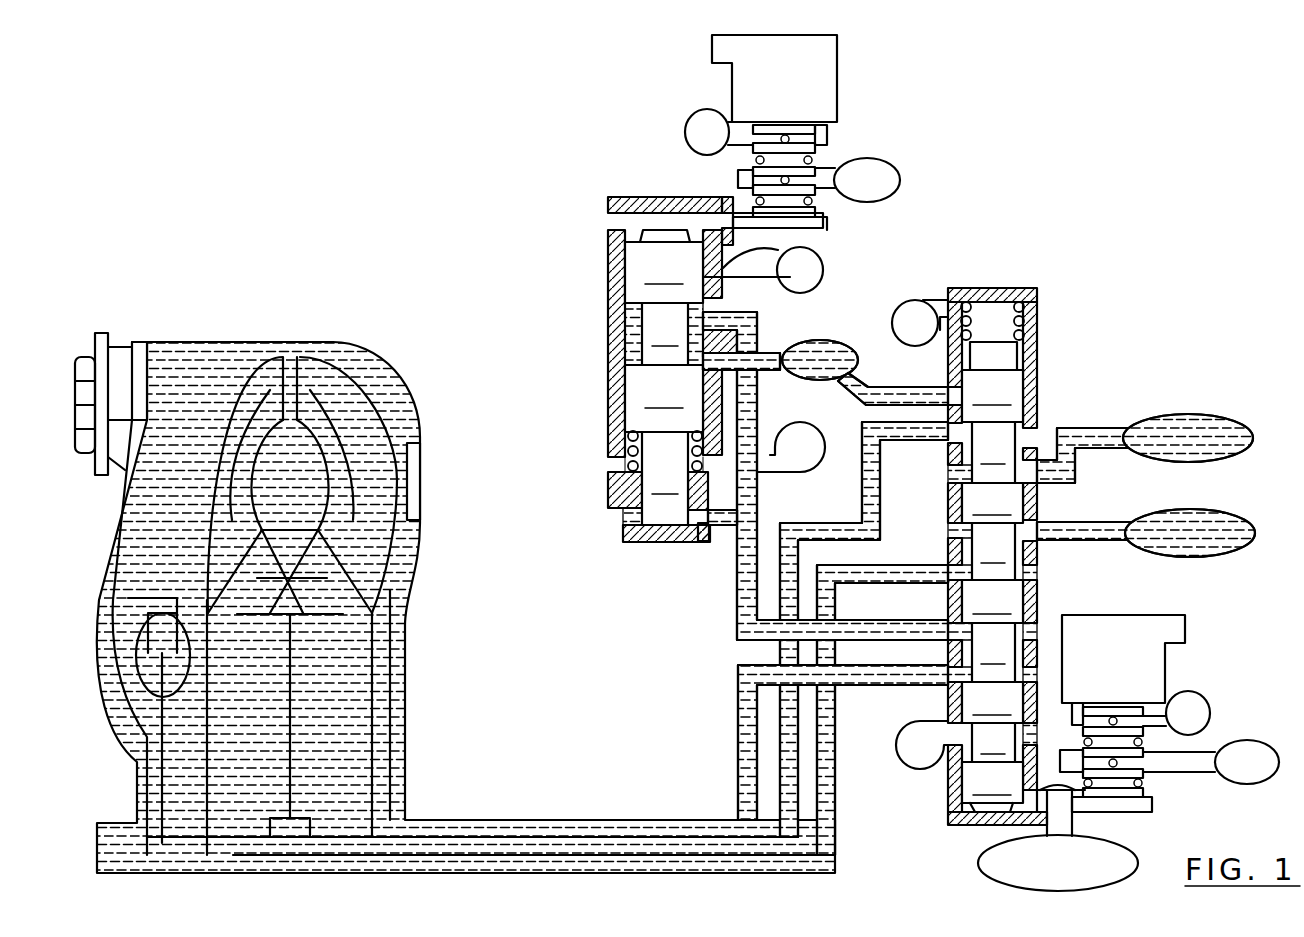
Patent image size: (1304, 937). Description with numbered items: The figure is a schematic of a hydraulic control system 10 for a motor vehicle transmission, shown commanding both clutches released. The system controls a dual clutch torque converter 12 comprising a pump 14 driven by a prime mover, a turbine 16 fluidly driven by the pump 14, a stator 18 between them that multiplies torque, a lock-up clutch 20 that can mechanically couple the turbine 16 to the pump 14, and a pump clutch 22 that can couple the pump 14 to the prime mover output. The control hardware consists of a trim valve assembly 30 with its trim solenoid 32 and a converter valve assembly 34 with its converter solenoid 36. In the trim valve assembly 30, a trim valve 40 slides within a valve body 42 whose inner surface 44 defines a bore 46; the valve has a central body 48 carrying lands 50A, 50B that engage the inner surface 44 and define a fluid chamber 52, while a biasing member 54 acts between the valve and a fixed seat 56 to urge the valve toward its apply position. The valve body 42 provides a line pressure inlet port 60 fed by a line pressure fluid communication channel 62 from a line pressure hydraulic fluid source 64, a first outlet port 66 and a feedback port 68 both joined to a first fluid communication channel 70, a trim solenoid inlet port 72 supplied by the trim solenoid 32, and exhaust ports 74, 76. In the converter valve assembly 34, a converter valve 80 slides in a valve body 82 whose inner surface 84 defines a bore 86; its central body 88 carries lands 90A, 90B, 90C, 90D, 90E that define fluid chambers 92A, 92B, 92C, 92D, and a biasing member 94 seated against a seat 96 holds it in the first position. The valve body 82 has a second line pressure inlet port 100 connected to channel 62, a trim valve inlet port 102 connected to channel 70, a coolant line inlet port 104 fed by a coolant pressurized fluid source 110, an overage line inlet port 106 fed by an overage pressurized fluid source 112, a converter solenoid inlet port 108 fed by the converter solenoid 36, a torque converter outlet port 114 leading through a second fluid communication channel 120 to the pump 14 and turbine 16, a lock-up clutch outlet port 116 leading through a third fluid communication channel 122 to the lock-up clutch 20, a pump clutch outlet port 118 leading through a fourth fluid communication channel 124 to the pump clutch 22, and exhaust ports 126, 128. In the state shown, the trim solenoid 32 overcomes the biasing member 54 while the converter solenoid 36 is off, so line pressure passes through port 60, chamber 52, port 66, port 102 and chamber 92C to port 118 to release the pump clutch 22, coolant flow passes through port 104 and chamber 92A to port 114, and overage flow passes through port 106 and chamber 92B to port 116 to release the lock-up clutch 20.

The hydraulic control system 10 is at (1011, 544).
The dual clutch torque converter 12 is at (345, 318).
The pump 14 is at (375, 407).
The turbine 16 is at (292, 345).
The stator 18 is at (345, 608).
The lock-up clutch 20 is at (130, 370).
The pump clutch 22 is at (420, 480).
The trim valve assembly 30 is at (671, 384).
The trim solenoid 32 is at (840, 86).
The converter valve assembly 34 is at (1011, 572).
The converter solenoid 36 is at (1189, 631).
The trim valve 40 is at (612, 399).
The valve body 42 is at (609, 420).
The inner surface 44 is at (624, 377).
The bore 46 is at (765, 434).
The central body 48 is at (665, 414).
The land 50A is at (664, 266).
The land 50B is at (664, 398).
The fluid chamber 52 is at (628, 327).
The biasing member 54 is at (628, 458).
The seat 56 is at (612, 502).
The line pressure inlet port 60 is at (745, 393).
The line pressure fluid communication channel 62 is at (790, 352).
The line pressure hydraulic fluid source 64 is at (847, 360).
The first outlet port 66 is at (740, 322).
The feedback port 68 is at (706, 546).
The first fluid communication channel 70 is at (740, 630).
The trim solenoid inlet port 72 is at (728, 198).
The exhaust port 74 is at (805, 250).
The exhaust port 76 is at (735, 482).
The converter valve 80 is at (1036, 432).
The valve body 82 is at (1037, 338).
The inner surface 84 is at (1027, 577).
The bore 86 is at (1030, 497).
The central body 88 is at (993, 592).
The land 90A is at (992, 382).
The land 90B is at (992, 503).
The land 90C is at (992, 601).
The land 90D is at (992, 702).
The land 90E is at (992, 787).
The fluid chamber 92A is at (945, 477).
The fluid chamber 92B is at (946, 538).
The fluid chamber 92C is at (945, 664).
The fluid chamber 92D is at (955, 792).
The biasing member 94 is at (960, 291).
The seat 96 is at (1010, 291).
The second line pressure inlet port 100 is at (945, 402).
The trim valve inlet port 102 is at (946, 620).
The coolant line inlet port 104 is at (1062, 466).
The overage line inlet port 106 is at (1040, 550).
The converter solenoid inlet port 108 is at (1052, 792).
The coolant pressurized fluid source 110 is at (1210, 436).
The overage pressurized fluid source 112 is at (1240, 534).
The torque converter outlet port 114 is at (945, 450).
The lock-up clutch outlet port 116 is at (946, 565).
The pump clutch outlet port 118 is at (945, 688).
The second fluid communication channel 120 is at (813, 532).
The third fluid communication channel 122 is at (830, 858).
The fourth fluid communication channel 124 is at (744, 716).
The exhaust port 126 is at (948, 748).
The exhaust port 128 is at (935, 330).